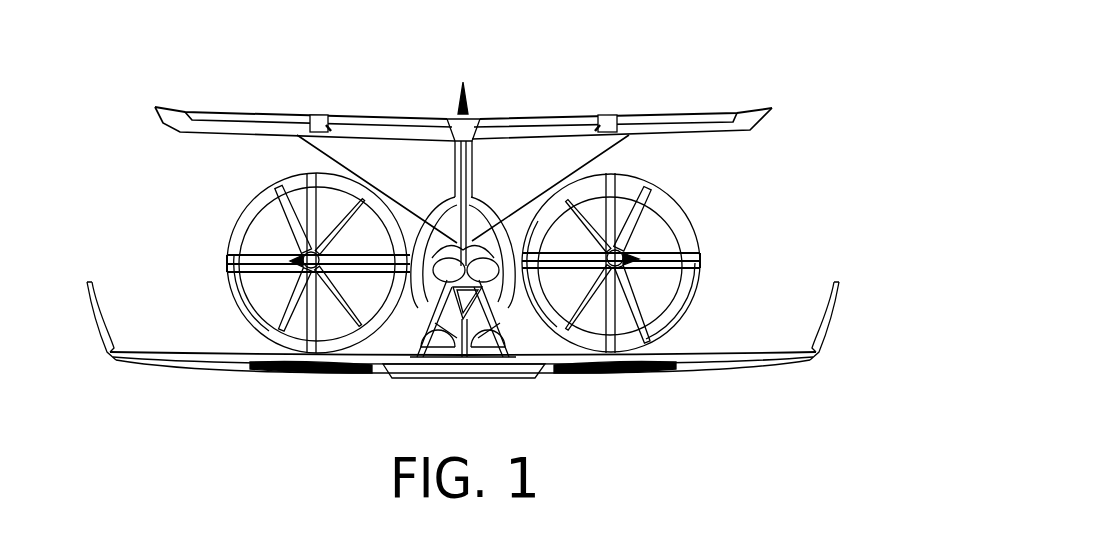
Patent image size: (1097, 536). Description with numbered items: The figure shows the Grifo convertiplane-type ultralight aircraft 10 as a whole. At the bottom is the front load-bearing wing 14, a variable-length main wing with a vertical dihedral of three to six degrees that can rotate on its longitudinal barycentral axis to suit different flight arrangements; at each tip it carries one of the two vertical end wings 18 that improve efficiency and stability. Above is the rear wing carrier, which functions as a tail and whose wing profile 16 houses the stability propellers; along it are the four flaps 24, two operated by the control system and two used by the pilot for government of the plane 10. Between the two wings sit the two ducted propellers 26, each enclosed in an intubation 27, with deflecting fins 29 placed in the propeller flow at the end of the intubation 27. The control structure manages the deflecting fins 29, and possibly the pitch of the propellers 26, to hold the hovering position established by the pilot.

The ultralight aircraft 10 is at (708, 62).
The front load-bearing wing 14 is at (176, 365).
The wing profile 16 is at (178, 112).
The vertical end wings 18 is at (88, 306).
The flaps 24 is at (228, 113).
The ducted propellers 26 is at (250, 207).
The intubation 27 is at (243, 220).
The deflecting fins 29 is at (230, 281).